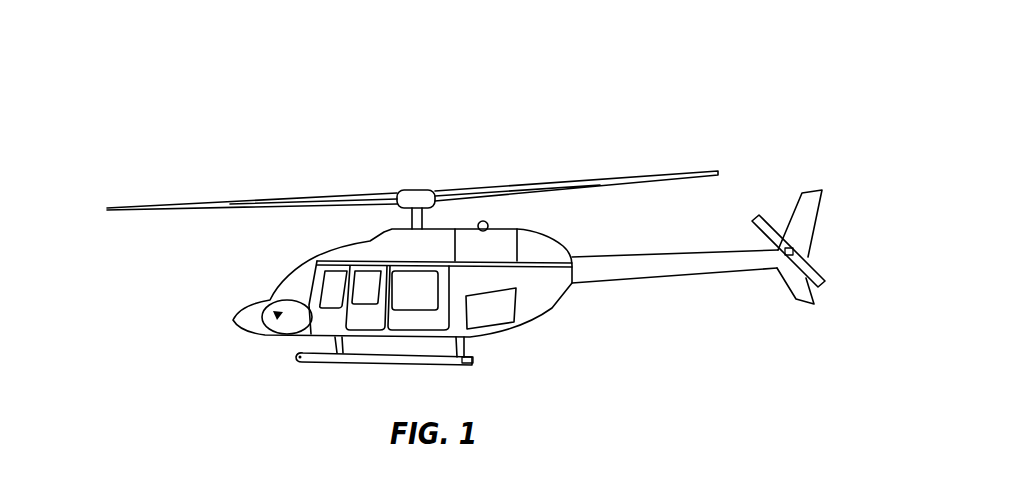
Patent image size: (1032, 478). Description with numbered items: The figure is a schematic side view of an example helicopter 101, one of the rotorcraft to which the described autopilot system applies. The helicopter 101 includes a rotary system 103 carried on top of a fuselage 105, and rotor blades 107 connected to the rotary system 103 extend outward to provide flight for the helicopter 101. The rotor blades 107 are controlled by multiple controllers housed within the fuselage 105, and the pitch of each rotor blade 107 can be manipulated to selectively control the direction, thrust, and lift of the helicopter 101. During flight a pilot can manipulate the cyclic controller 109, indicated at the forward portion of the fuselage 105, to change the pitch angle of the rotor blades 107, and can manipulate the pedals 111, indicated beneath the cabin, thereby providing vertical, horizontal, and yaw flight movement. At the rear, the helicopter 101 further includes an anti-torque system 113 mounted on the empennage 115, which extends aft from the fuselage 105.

The helicopter 101 is at (145, 80).
The rotary system 103 is at (326, 98).
The fuselage 105 is at (318, 263).
The rotor blades 107 is at (577, 195).
The cyclic controller 109 is at (275, 328).
The pedals 111 is at (280, 337).
The anti-torque system 113 is at (822, 243).
The empennage 115 is at (748, 270).